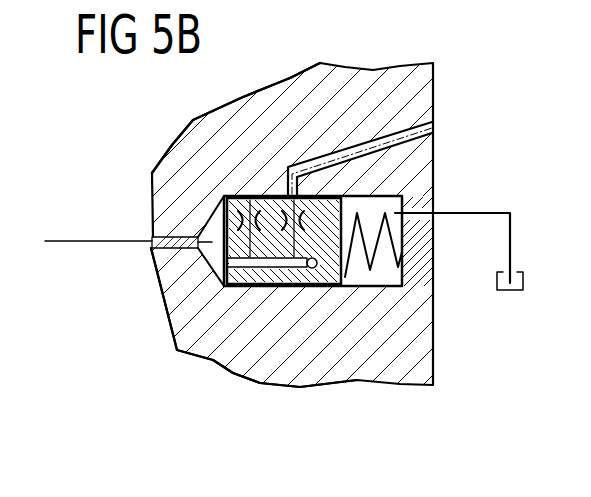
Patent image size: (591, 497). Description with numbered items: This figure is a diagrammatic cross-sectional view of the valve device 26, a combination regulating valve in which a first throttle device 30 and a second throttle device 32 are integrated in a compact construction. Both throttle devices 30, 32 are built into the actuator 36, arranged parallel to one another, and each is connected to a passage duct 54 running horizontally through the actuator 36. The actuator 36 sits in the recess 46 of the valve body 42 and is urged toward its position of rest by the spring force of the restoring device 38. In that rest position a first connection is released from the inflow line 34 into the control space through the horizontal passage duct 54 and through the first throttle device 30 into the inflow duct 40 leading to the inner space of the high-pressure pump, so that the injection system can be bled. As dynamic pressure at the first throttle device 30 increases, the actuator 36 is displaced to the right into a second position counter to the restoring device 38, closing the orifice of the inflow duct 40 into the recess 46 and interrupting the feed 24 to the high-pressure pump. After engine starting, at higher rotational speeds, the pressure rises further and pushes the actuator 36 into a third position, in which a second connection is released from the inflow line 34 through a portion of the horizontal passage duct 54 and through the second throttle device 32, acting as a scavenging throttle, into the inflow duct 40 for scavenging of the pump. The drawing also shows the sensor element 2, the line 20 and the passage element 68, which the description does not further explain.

The pressure sensor 2 is at (517, 292).
The signal line 20 is at (512, 248).
The feed 24 is at (75, 241).
The valve device 26 is at (130, 142).
The first throttle device 30 is at (273, 192).
The second throttle device 32 is at (238, 218).
The inflow line 34 is at (113, 242).
The actuator 36 is at (326, 262).
The restoring device 38 is at (398, 224).
The inflow duct 40 is at (432, 123).
The valve body 42 is at (347, 80).
The recess 46 is at (177, 334).
The passage duct 54 is at (280, 194).
The conical inlet passage 68 is at (218, 272).